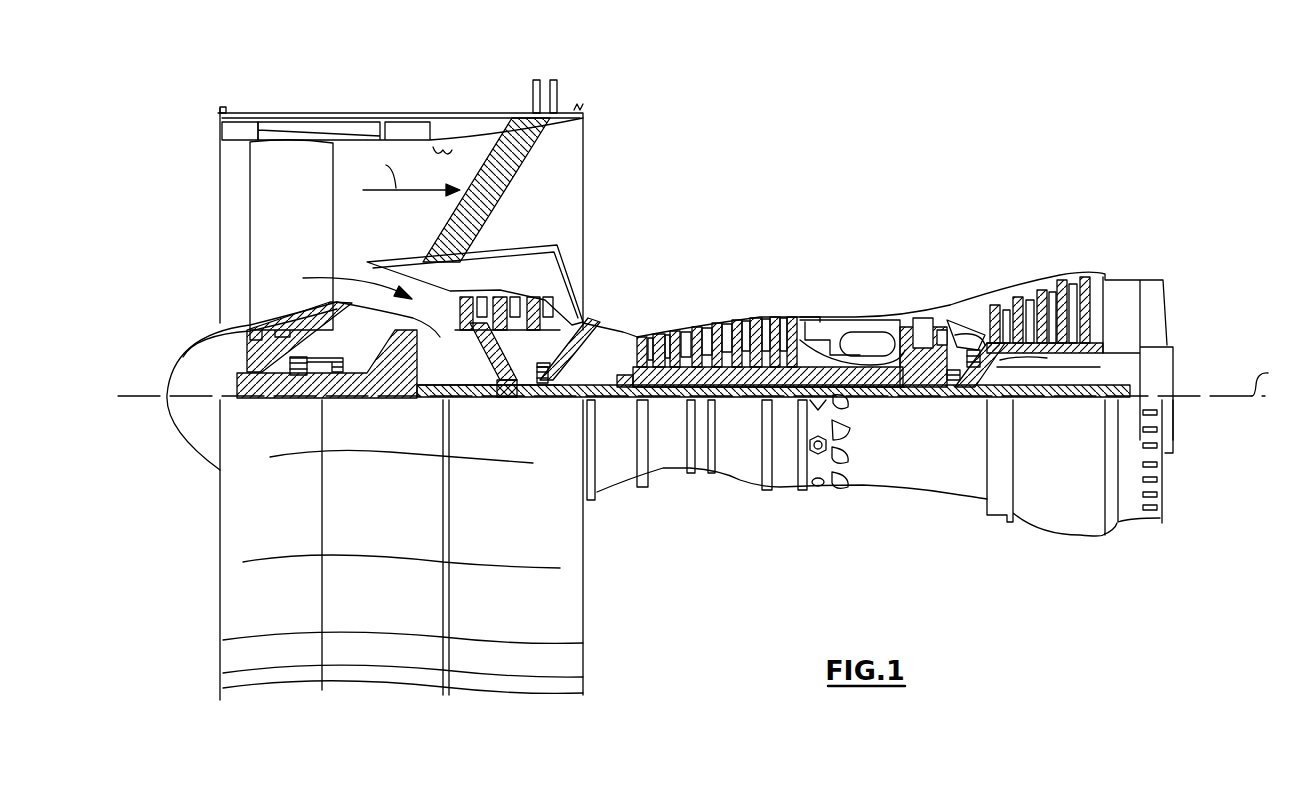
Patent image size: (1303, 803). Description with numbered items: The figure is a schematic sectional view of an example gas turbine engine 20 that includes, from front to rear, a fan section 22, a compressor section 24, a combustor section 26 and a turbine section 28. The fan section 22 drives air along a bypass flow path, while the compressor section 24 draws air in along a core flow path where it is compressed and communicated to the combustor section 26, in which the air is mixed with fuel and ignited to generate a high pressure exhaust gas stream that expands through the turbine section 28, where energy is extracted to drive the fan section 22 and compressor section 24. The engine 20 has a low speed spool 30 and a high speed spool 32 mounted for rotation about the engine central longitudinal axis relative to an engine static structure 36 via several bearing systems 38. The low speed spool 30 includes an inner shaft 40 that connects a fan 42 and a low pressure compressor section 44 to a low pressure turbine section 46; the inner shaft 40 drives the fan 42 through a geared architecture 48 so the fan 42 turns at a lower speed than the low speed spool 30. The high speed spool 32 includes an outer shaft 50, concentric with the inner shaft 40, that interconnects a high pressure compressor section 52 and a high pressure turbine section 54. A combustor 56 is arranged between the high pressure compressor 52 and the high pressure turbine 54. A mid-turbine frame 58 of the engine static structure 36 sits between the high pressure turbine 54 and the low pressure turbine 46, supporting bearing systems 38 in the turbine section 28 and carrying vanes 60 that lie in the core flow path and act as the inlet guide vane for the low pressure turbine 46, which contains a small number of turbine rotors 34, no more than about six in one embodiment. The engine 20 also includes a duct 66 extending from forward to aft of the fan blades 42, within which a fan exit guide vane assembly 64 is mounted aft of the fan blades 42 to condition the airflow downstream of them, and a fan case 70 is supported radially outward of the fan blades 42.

The gas turbine engine 20 is at (862, 170).
The fan section 22 is at (430, 85).
The compressor section 24 is at (847, 232).
The combustor section 26 is at (855, 232).
The turbine section 28 is at (1122, 232).
The low speed spool 30 is at (742, 398).
The high speed spool 32 is at (780, 367).
The turbine rotors 34 is at (1050, 368).
The engine static structure 36 is at (782, 480).
The bearing systems 38 is at (297, 380).
The inner shaft 40 is at (600, 405).
The fan 42 is at (305, 248).
The low pressure compressor section 44 is at (533, 300).
The low pressure turbine section 46 is at (1050, 292).
The geared architecture 48 is at (410, 383).
The outer shaft 50 is at (866, 392).
The high pressure compressor section 52 is at (718, 367).
The high pressure turbine section 54 is at (926, 317).
The combustor 56 is at (857, 340).
The mid-turbine frame 58 is at (963, 311).
The vanes 60 is at (1010, 372).
The fan exit guide vane assembly 64 is at (518, 165).
The duct 66 is at (441, 148).
The fan case 70 is at (358, 128).